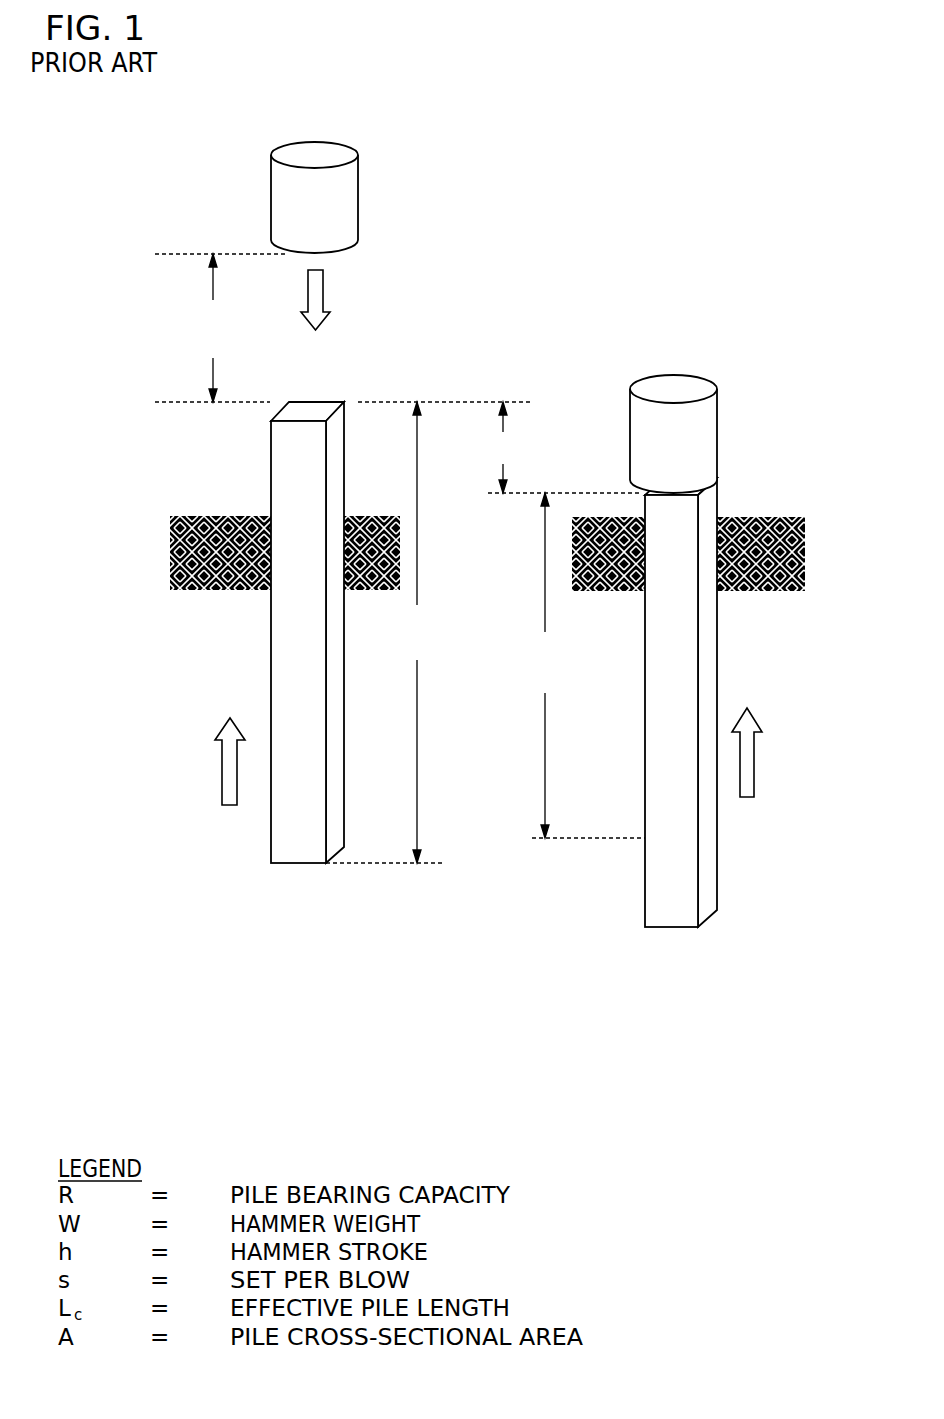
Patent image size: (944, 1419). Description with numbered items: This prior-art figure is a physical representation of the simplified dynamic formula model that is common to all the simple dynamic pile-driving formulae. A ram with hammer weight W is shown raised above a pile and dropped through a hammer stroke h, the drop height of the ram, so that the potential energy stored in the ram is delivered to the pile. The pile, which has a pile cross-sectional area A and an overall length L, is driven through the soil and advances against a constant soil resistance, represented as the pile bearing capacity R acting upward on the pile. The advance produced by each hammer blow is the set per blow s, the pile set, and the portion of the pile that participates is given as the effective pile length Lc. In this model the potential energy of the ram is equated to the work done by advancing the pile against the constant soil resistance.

The pile bearing capacity R is at (488, 780).
The hammer weight W is at (347, 215).
The hammer stroke h is at (220, 328).
The set per blow s is at (564, 447).
The effective pile length Lc is at (588, 665).
The pile length L is at (428, 632).
The pile cross-sectional area A is at (316, 410).